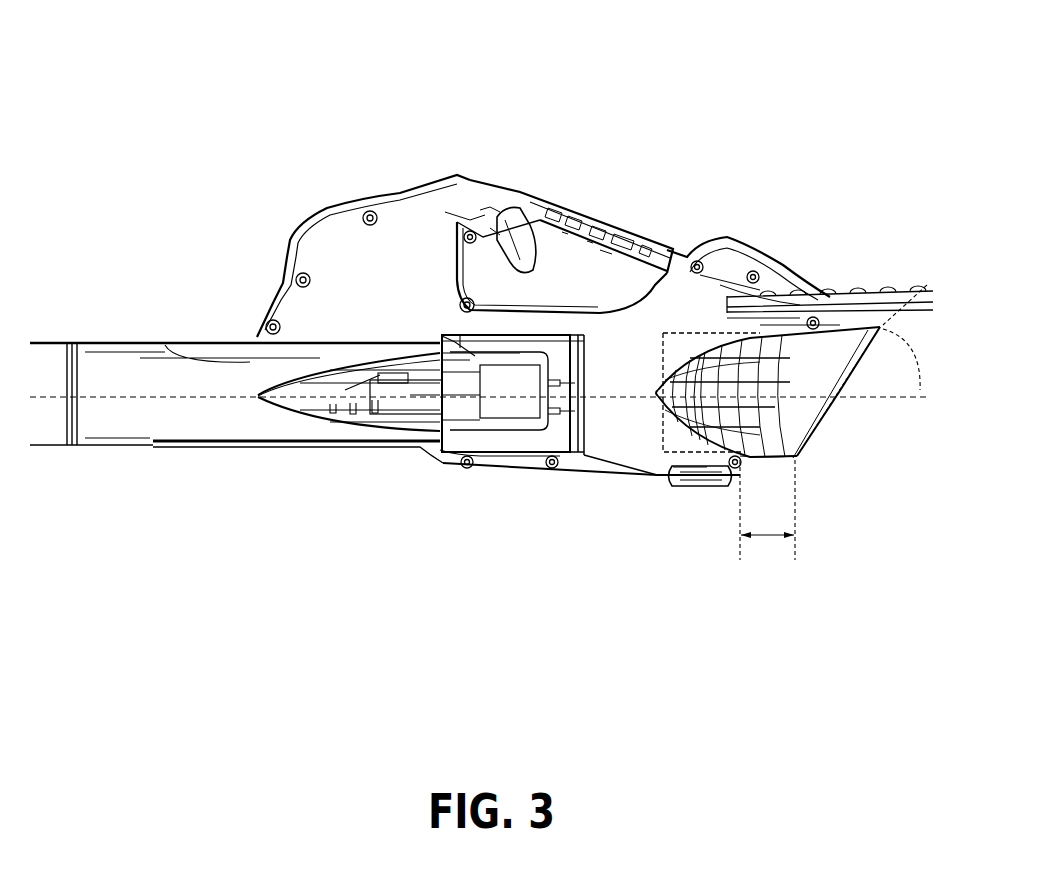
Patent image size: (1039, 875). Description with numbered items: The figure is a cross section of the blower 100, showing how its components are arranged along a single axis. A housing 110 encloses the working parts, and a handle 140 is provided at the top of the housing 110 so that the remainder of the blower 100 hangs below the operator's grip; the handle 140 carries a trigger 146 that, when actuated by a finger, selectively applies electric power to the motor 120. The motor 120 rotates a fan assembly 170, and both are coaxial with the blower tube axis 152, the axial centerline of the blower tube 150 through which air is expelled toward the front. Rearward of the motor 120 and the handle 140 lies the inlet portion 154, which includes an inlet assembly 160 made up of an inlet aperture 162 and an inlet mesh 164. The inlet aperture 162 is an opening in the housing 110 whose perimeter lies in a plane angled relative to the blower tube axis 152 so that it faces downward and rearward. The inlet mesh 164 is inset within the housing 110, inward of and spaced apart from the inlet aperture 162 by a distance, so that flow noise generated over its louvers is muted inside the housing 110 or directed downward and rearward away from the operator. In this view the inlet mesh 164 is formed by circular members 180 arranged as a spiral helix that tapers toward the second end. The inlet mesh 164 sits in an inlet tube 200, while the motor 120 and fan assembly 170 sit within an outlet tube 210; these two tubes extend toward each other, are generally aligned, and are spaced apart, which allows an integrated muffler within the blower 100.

The blower 100 is at (777, 80).
The housing 110 is at (352, 250).
The motor 120 is at (460, 417).
The handle 140 is at (640, 233).
The trigger 146 is at (533, 257).
The blower tube 150 is at (155, 450).
The blower tube axis 152 is at (128, 393).
The inlet portion 154 is at (830, 450).
The inlet assembly 160 is at (779, 374).
The inlet aperture 162 is at (828, 401).
The inlet mesh 164 is at (708, 427).
The fan assembly 170 is at (485, 447).
The circular members 180 is at (733, 380).
The inlet tube 200 is at (683, 333).
The outlet tube 210 is at (580, 452).